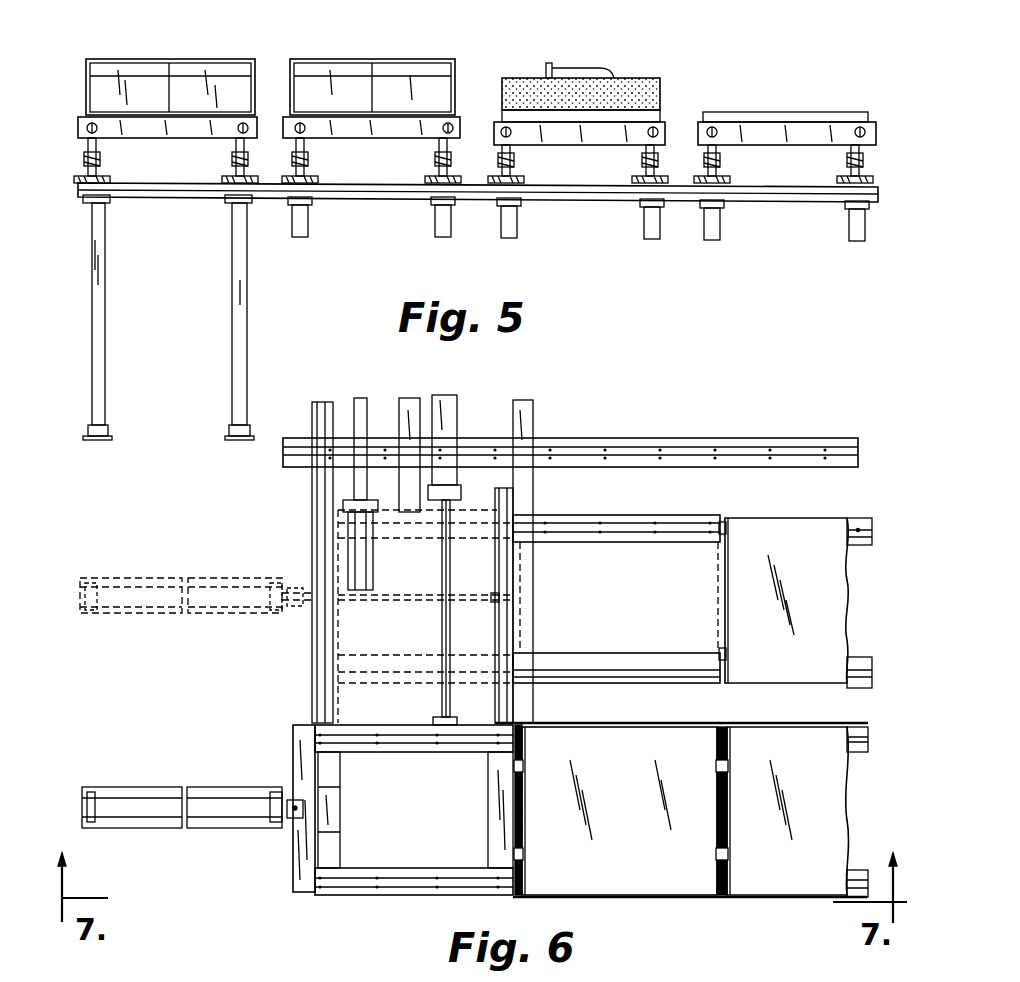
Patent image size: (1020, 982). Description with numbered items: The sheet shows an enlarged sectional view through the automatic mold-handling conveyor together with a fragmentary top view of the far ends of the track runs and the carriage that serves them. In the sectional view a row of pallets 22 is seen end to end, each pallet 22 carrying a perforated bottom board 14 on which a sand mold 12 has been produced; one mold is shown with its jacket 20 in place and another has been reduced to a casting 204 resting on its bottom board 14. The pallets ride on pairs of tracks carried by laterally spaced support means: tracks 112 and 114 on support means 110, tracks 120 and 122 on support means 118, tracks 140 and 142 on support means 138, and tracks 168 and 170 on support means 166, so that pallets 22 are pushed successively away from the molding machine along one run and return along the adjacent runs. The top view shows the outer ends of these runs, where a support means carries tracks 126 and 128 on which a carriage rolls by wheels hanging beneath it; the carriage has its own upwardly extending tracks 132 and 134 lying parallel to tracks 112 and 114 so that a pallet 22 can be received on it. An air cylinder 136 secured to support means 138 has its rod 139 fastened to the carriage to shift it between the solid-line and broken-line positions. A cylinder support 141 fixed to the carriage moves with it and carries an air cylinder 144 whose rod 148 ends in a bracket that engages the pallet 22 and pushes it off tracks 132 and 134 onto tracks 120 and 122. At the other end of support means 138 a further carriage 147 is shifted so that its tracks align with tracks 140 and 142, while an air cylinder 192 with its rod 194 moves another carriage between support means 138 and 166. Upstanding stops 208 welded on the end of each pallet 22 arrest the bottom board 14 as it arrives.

In FIG. 5, the sand mold 12 is at (658, 88).
In FIG. 5, the bottom board 14 is at (660, 114).
In FIG. 5, the jacket 20 is at (236, 62).
In FIG. 6, the jacket 20 is at (775, 535).
In FIG. 5, the pallet 22 is at (79, 116).
In FIG. 5, the support means 110 is at (202, 220).
In FIG. 6, the support means 110 is at (852, 832).
In FIG. 5, the track 112 is at (92, 165).
In FIG. 6, the track 112 is at (860, 890).
In FIG. 5, the track 114 is at (238, 163).
In FIG. 6, the track 114 is at (855, 755).
In FIG. 5, the support means 118 is at (383, 222).
In FIG. 6, the support means 118 is at (856, 607).
In FIG. 5, the track 120 is at (326, 159).
In FIG. 6, the track 120 is at (870, 660).
In FIG. 5, the track 122 is at (440, 165).
In FIG. 6, the track 122 is at (868, 525).
In FIG. 6, the track 126 is at (505, 630).
In FIG. 6, the track 128 is at (320, 633).
In FIG. 6, the track 132 is at (412, 672).
In FIG. 6, the track 134 is at (481, 545).
In FIG. 6, the air cylinder 136 is at (452, 398).
In FIG. 5, the support means 138 is at (605, 218).
In FIG. 6, the support means 138 is at (740, 440).
In FIG. 6, the rod 139 is at (441, 624).
In FIG. 5, the track 140 is at (513, 166).
In FIG. 6, the cylinder support 141 is at (165, 613).
In FIG. 5, the track 142 is at (650, 165).
In FIG. 6, the air cylinder 144 is at (144, 578).
In FIG. 6, the carriage 147 is at (522, 562).
In FIG. 6, the rod 148 is at (422, 592).
In FIG. 5, the support means 166 is at (838, 212).
In FIG. 5, the track 168 is at (722, 168).
In FIG. 5, the track 170 is at (862, 167).
In FIG. 6, the air cylinder 192 is at (360, 552).
In FIG. 6, the rod 194 is at (362, 404).
In FIG. 5, the casting 204 is at (590, 66).
In FIG. 6, the stop 208 is at (724, 530).